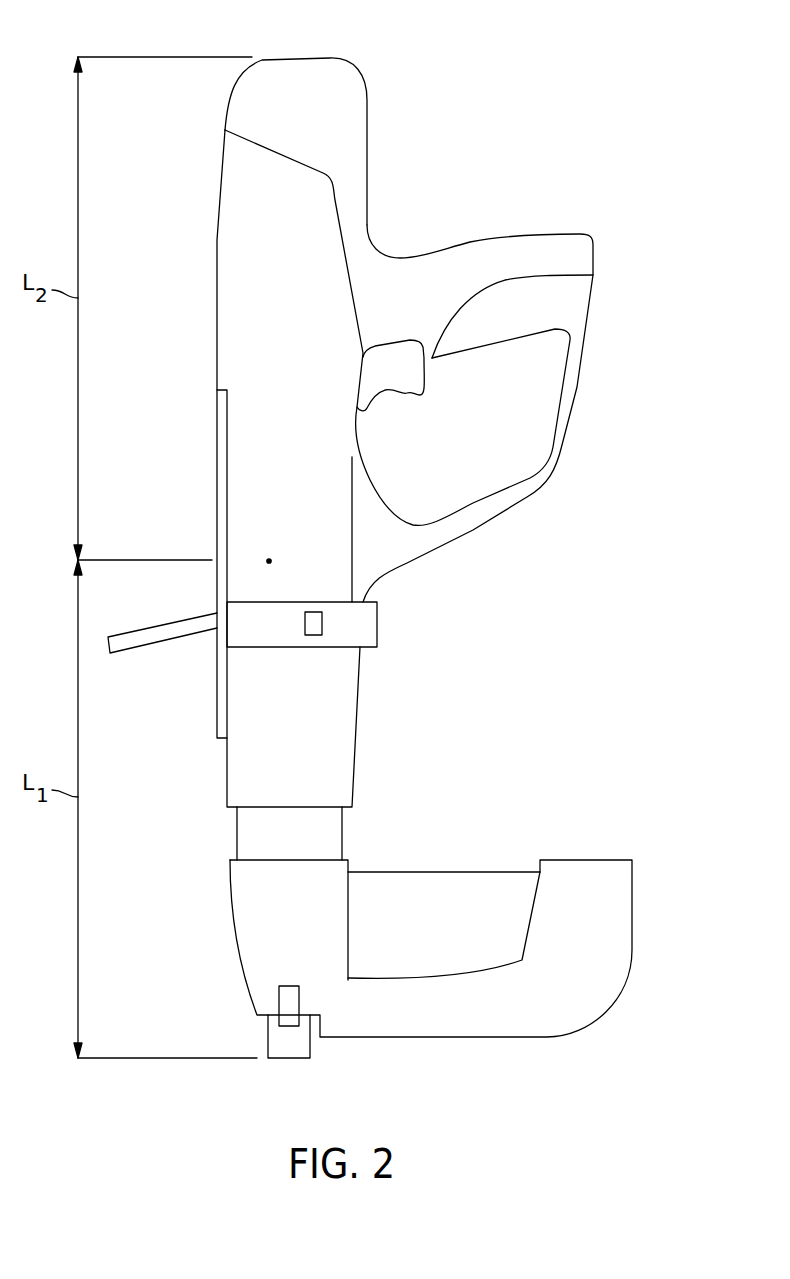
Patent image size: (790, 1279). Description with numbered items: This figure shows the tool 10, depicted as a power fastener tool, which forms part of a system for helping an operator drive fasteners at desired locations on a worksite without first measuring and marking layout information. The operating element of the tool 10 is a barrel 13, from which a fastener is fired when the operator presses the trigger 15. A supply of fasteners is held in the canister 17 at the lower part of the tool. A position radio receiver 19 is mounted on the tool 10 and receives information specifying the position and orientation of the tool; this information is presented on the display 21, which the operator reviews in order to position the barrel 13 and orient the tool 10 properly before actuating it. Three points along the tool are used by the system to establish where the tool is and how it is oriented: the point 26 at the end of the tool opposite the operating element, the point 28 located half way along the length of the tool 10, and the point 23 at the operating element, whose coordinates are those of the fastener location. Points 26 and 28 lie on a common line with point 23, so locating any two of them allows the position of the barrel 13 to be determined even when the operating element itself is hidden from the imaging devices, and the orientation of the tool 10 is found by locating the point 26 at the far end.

The tool 10 is at (223, 235).
The point 26 is at (335, 57).
The trigger 15 is at (405, 396).
The point 28 is at (269, 561).
The display 21 is at (143, 633).
The position radio receiver 19 is at (313, 633).
The canister 17 is at (453, 878).
The barrel 13 is at (307, 1050).
The point 23 is at (288, 1058).